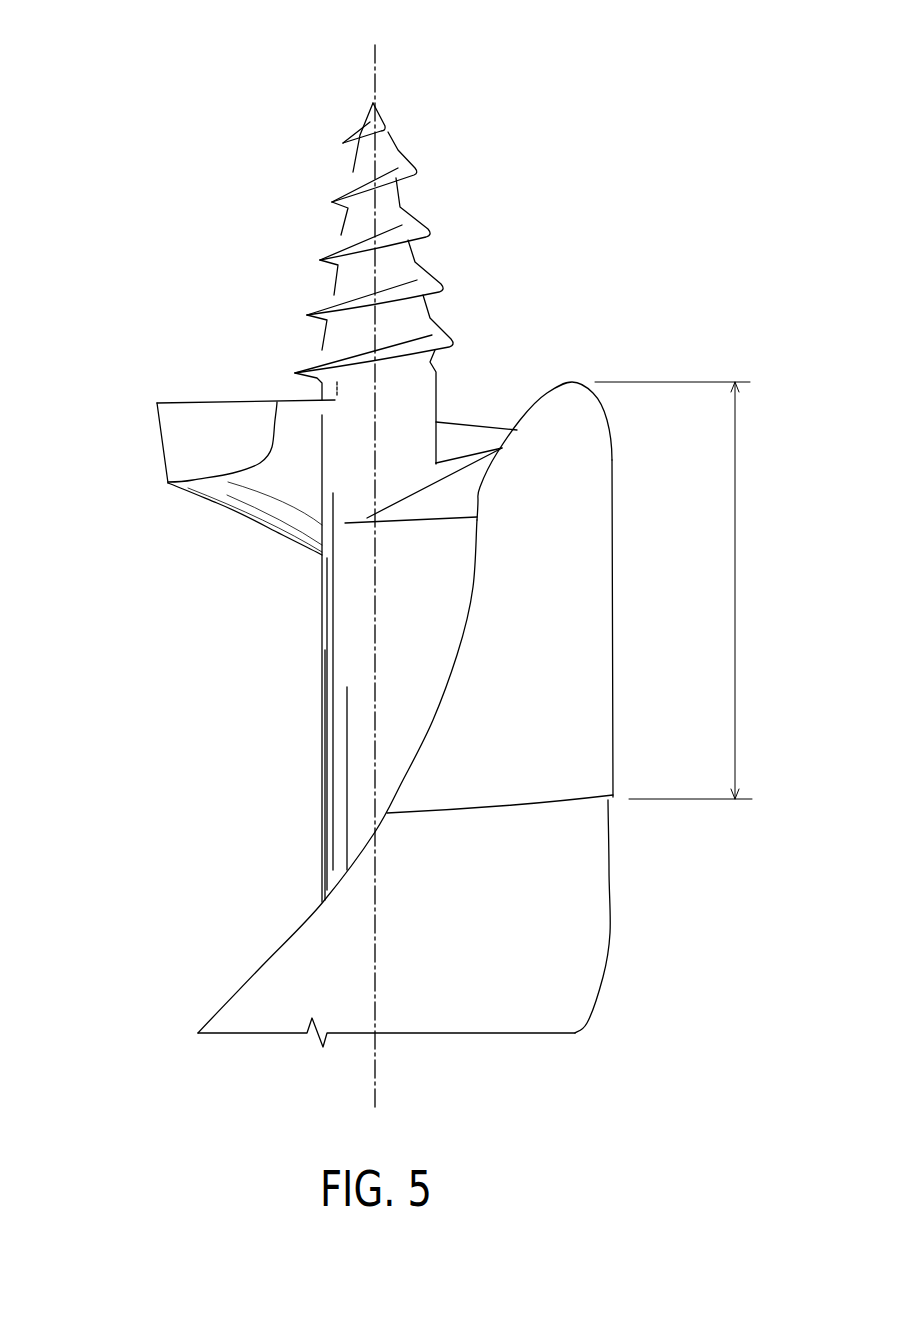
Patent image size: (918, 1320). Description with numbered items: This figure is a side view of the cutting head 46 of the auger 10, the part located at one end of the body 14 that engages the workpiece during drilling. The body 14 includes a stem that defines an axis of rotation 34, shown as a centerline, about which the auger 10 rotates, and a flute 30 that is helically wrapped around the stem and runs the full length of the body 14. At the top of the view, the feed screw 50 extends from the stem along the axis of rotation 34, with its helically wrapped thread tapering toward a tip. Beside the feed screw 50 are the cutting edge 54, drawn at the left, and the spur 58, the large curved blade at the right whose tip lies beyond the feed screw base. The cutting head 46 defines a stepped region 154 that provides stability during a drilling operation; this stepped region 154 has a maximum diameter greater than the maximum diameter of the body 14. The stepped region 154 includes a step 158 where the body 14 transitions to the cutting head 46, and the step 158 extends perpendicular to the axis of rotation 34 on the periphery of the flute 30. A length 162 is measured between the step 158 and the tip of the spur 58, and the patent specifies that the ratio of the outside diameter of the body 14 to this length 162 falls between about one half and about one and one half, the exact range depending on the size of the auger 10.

The auger 10 is at (653, 78).
The body 14 is at (240, 1082).
The flute 30 is at (272, 984).
The axis of rotation 34 is at (373, 1057).
The cutting head 46 is at (147, 137).
The feed screw 50 is at (387, 205).
The cutting edge 54 is at (190, 400).
The spur 58 is at (572, 382).
The stepped region 154 is at (643, 595).
The step 158 is at (583, 807).
The length of the step 162 is at (735, 455).